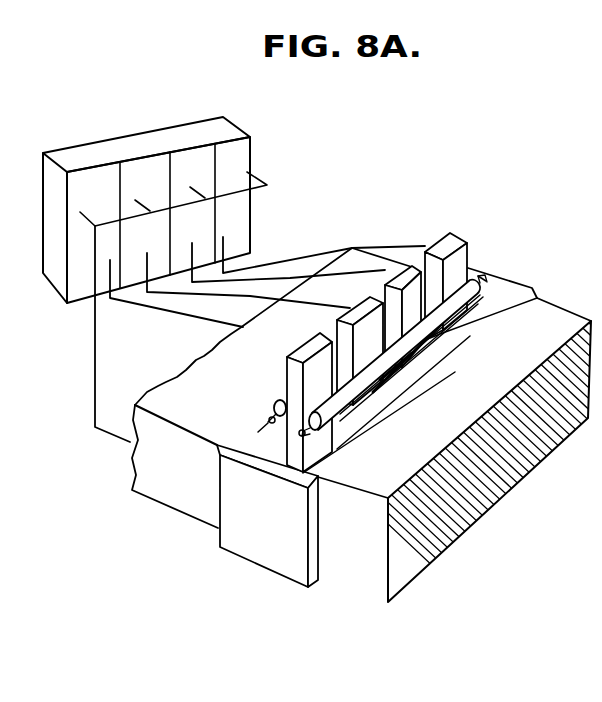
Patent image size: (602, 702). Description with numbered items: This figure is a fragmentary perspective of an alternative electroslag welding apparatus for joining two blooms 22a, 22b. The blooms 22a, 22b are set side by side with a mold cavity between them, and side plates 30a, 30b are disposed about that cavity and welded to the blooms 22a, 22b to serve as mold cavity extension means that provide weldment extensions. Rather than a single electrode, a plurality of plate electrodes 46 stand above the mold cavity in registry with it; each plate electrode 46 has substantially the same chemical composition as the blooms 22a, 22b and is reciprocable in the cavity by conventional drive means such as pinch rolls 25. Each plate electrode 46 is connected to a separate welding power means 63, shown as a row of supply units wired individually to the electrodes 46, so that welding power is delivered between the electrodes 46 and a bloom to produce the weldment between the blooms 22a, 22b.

The welding power means 63 is at (106, 196).
The bloom 22a is at (257, 362).
The bloom 22b is at (484, 372).
The side plate 30a is at (264, 556).
The side plate 30b is at (507, 287).
The plate electrode 46 is at (484, 237).
The pinch rolls 25 is at (377, 392).